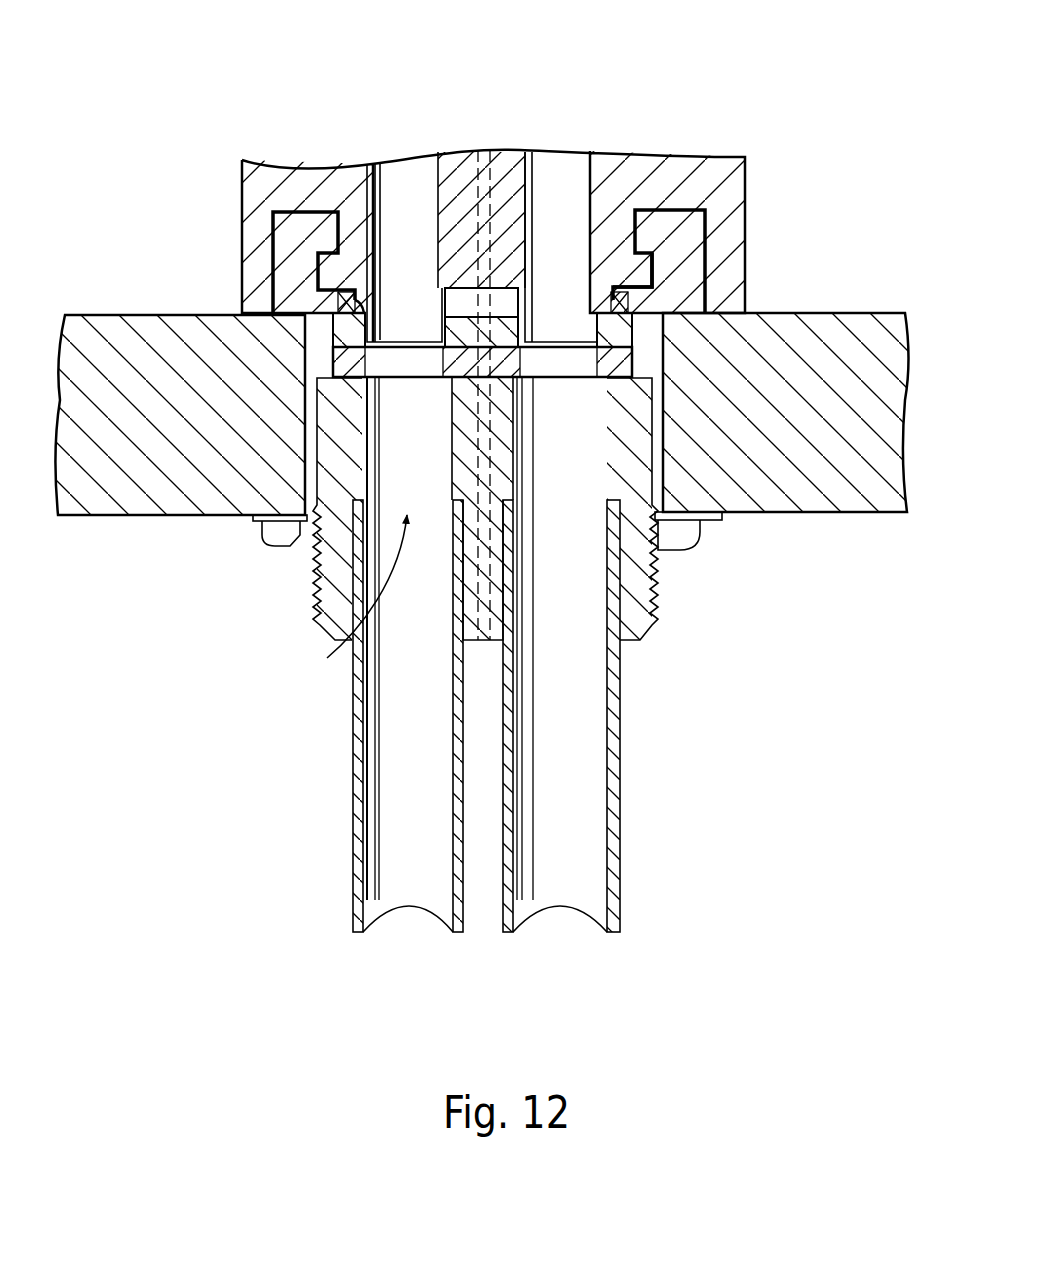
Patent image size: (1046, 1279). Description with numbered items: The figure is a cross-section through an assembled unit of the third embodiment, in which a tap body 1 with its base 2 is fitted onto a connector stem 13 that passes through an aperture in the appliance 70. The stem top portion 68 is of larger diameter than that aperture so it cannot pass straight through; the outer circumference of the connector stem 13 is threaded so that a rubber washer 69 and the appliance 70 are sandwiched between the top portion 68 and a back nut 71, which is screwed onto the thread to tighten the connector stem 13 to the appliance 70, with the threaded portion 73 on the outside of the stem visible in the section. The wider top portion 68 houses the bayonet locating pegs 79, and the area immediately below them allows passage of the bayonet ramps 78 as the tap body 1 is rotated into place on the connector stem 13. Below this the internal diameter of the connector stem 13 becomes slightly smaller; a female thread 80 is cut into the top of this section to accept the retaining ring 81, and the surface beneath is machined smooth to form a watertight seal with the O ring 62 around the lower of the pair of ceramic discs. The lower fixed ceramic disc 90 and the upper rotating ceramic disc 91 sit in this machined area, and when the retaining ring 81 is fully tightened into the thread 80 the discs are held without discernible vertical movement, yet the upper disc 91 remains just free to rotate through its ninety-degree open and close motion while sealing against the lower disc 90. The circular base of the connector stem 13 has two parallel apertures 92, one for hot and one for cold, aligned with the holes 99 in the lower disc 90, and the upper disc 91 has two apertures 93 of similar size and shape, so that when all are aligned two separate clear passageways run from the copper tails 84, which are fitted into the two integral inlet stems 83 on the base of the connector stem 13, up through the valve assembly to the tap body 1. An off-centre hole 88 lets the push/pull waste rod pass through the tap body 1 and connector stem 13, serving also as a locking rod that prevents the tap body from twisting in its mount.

The tap body 1 is at (716, 72).
The base 2 is at (748, 176).
The connector stem 13 is at (508, 478).
The O ring seal 62 is at (580, 312).
The stem top portion 68 is at (266, 258).
The rubber washer 69 is at (733, 520).
The appliance 70 is at (843, 462).
The back nut 71 is at (692, 537).
The left threaded nut 73 is at (318, 597).
The bayonet ramps 78 is at (650, 270).
The bayonet locating pegs 79 is at (652, 230).
The female thread 80 is at (335, 300).
The retaining ring 81 is at (660, 323).
The inlet stems 83 is at (437, 305).
The copper tails 84 is at (563, 892).
The hole 88 is at (507, 190).
The lower fixed ceramic disc 90 is at (348, 380).
The upper rotating ceramic disc 91 is at (345, 322).
The apertures 92 is at (347, 596).
The apertures 93 is at (553, 337).
The holes 99 is at (418, 365).